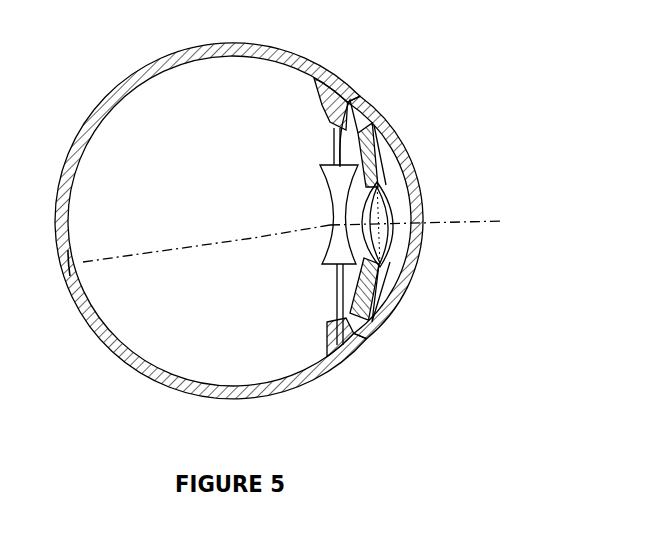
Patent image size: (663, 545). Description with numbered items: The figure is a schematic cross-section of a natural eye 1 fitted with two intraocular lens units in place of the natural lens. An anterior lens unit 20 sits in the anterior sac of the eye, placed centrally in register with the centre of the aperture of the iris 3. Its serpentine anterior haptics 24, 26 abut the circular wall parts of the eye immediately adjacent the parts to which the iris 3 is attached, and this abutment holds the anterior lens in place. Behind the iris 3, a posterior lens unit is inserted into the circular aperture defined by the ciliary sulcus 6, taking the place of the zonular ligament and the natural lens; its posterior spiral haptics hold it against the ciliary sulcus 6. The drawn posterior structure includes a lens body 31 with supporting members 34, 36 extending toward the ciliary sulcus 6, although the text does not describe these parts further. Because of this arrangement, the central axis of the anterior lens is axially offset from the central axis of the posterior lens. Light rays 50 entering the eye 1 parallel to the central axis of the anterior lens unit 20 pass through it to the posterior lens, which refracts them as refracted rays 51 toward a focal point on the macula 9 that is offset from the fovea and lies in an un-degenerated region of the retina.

The eye 1 is at (303, 60).
The iris 3 is at (378, 152).
The ciliary sulcus 6 is at (330, 117).
The macula 9 is at (91, 266).
The anterior lens unit 20 is at (387, 247).
The serpentine anterior haptic 24 is at (380, 167).
The serpentine anterior haptic 26 is at (397, 280).
The biconcave lens element 31 is at (327, 187).
The upper support strut 34 is at (333, 146).
The lower support strut 36 is at (337, 287).
The light rays 50 is at (503, 221).
The refracted light rays 51 is at (178, 252).